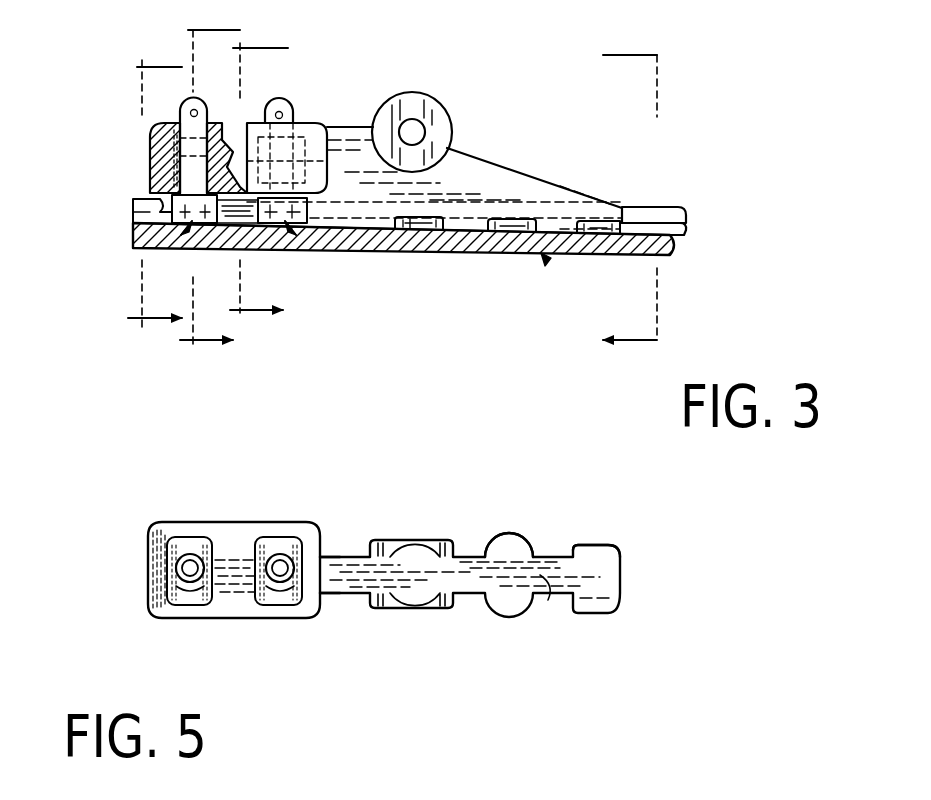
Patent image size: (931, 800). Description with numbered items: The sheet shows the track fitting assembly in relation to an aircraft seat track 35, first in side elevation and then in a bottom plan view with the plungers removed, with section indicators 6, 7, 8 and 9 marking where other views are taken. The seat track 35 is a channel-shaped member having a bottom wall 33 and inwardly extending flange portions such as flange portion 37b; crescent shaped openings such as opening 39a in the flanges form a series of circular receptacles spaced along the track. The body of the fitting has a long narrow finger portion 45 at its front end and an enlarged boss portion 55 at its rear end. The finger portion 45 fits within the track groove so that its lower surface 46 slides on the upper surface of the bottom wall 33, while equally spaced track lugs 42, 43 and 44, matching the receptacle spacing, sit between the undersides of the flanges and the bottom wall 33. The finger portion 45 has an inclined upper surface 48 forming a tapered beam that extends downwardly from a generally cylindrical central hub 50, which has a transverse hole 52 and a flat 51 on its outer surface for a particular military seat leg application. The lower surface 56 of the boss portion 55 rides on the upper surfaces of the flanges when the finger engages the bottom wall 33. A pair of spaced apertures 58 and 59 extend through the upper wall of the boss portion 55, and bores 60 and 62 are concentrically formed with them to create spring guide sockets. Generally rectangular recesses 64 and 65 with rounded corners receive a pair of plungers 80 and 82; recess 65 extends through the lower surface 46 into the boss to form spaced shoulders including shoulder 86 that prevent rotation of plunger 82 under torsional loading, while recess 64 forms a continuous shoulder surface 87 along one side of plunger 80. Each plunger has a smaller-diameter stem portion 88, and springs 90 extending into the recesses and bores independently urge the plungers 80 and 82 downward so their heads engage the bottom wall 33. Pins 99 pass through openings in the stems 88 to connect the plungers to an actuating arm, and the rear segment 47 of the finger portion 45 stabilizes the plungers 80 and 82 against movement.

In FIG. 3, the bottom wall 33 is at (140, 235).
In FIG. 3, the seat track 35 is at (546, 262).
In FIG. 3, the flange portion 37b is at (688, 212).
In FIG. 3, the crescent shaped opening 39a is at (630, 207).
In FIG. 3, the track lug 42 is at (594, 233).
In FIG. 5, the track lug 42 is at (592, 547).
In FIG. 3, the track lug 43 is at (505, 233).
In FIG. 5, the track lug 43 is at (512, 547).
In FIG. 3, the track lug 44 is at (410, 232).
In FIG. 5, the track lug 44 is at (428, 545).
In FIG. 3, the finger portion 45 is at (480, 170).
In FIG. 3, the lower surface 46 is at (370, 232).
In FIG. 5, the lower surface 46 is at (218, 602).
In FIG. 3, the rear segment 47 is at (259, 232).
In FIG. 3, the inclined upper surface 48 is at (571, 190).
In FIG. 3, the central hub 50 is at (382, 98).
In FIG. 5, the central hub 50 is at (448, 600).
In FIG. 3, the flat 51 is at (443, 120).
In FIG. 3, the hole 52 is at (414, 118).
In FIG. 3, the boss portion 55 is at (243, 143).
In FIG. 5, the boss portion 55 is at (243, 535).
In FIG. 3, the lower surface 56 is at (138, 205).
In FIG. 5, the lower surface 56 is at (170, 592).
In FIG. 3, the aperture 58 is at (186, 100).
In FIG. 5, the aperture 58 is at (160, 578).
In FIG. 5, the aperture 59 is at (330, 545).
In FIG. 3, the bore 60 is at (150, 140).
In FIG. 5, the bore 60 is at (192, 598).
In FIG. 5, the bore 62 is at (255, 604).
In FIG. 5, the recess 64 is at (194, 540).
In FIG. 5, the recess 65 is at (289, 543).
In FIG. 3, the plunger 80 is at (190, 230).
In FIG. 3, the plunger 82 is at (292, 238).
In FIG. 5, the plunger 82 is at (288, 550).
In FIG. 5, the shoulder 86 is at (303, 618).
In FIG. 3, the shoulder surface 87 is at (215, 233).
In FIG. 3, the stem portion 88 is at (297, 125).
In FIG. 3, the spring 90 is at (150, 165).
In FIG. 3, the pin 99 is at (287, 108).
In FIG. 3, the section line 6- 6 is at (143, 197).
In FIG. 3, the section line 7- 7 is at (199, 189).
In FIG. 3, the section line 8- 8 is at (247, 184).
In FIG. 3, the section line 9- 9 is at (643, 201).